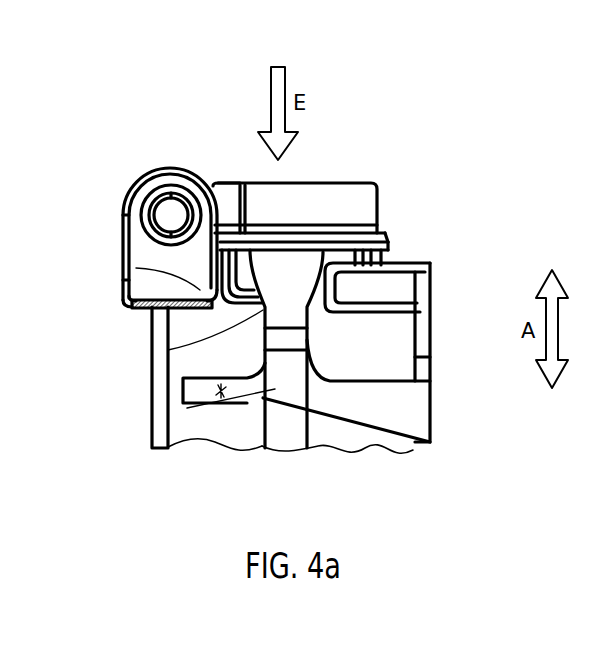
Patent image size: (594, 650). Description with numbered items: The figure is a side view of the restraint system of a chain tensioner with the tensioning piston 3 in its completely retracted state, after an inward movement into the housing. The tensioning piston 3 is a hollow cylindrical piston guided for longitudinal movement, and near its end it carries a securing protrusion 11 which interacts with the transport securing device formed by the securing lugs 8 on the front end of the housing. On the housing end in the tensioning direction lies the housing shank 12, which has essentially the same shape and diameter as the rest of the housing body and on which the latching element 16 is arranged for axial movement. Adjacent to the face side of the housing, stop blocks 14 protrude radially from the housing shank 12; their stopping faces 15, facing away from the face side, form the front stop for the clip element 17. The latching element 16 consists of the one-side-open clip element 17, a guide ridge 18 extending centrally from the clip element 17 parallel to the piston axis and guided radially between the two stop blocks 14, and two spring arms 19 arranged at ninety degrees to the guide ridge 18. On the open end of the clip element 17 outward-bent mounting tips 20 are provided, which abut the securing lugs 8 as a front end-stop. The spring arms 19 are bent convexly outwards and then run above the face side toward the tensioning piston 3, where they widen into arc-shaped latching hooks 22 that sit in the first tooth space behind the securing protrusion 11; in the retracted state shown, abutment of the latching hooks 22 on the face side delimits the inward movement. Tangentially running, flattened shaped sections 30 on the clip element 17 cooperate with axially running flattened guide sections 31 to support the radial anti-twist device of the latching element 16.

The tensioning piston 3 is at (270, 198).
The securing lugs 8 is at (143, 281).
The securing protrusion 11 is at (265, 233).
The housing shank 12 is at (180, 326).
The stop blocks 14 is at (356, 295).
The stopping faces 15 is at (398, 320).
The latching element 16 is at (187, 408).
The clip element 17 is at (230, 440).
The guide ridge 18 is at (402, 304).
The spring arms 19 is at (170, 350).
The mounting tips 20 is at (185, 382).
The latching hooks 22 is at (225, 258).
The shaped sections 30 is at (262, 400).
The guide sections 31 is at (298, 405).